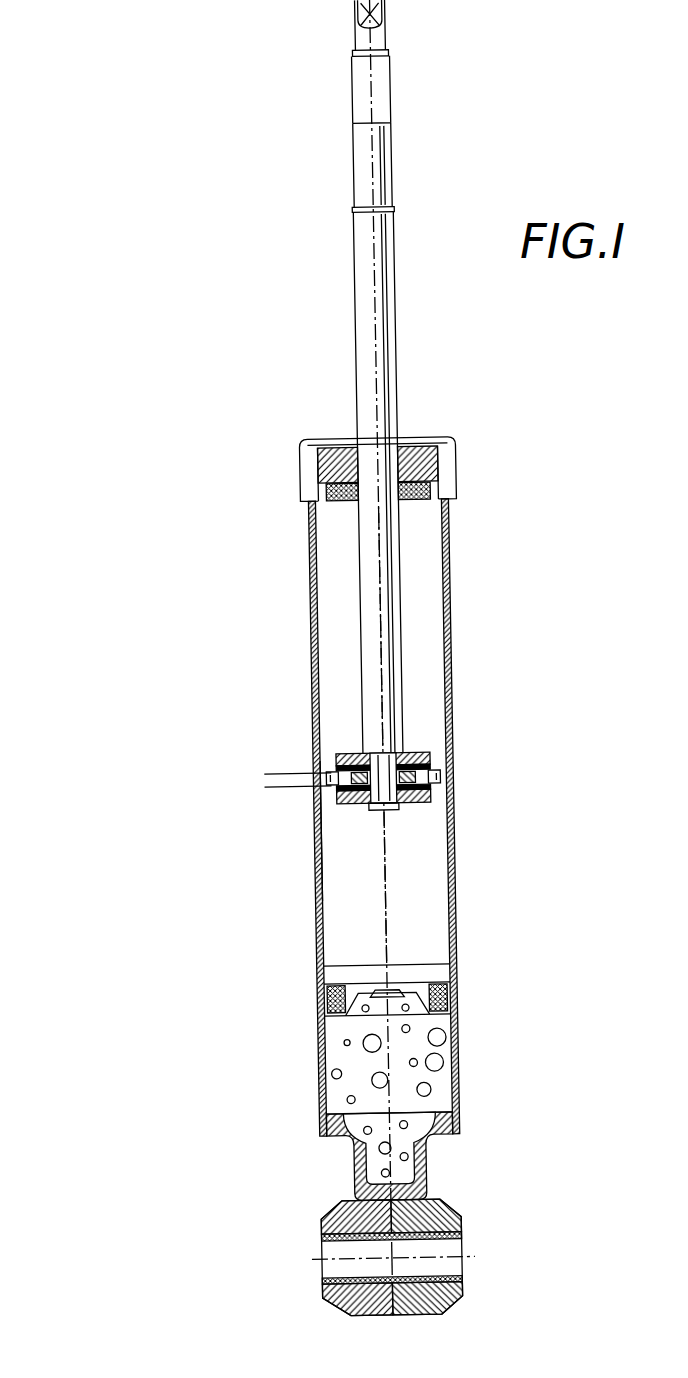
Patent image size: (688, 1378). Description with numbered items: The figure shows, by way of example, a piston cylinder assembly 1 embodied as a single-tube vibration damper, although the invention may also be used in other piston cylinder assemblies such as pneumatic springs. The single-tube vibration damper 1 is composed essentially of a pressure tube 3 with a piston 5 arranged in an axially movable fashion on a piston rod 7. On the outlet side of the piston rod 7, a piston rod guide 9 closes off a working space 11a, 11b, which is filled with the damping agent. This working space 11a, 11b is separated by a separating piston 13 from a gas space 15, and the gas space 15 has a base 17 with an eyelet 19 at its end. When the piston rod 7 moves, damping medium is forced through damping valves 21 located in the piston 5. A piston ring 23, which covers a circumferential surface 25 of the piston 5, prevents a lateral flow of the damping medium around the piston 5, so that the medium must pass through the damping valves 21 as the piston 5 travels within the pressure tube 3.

The piston cylinder assembly 1 is at (150, 846).
The pressure tube 3 is at (450, 634).
The piston 5 is at (323, 832).
The piston rod 7 is at (365, 272).
The piston rod guide 9 is at (435, 471).
The working space 11a is at (335, 646).
The working space 11b is at (423, 918).
The separating piston 13 is at (412, 987).
The gas space 15 is at (422, 1080).
The base 17 is at (452, 1137).
The eyelet 19 is at (462, 1226).
The damping valves 21 is at (338, 793).
The piston ring 23 is at (445, 758).
The circumferential surface 25 is at (274, 812).